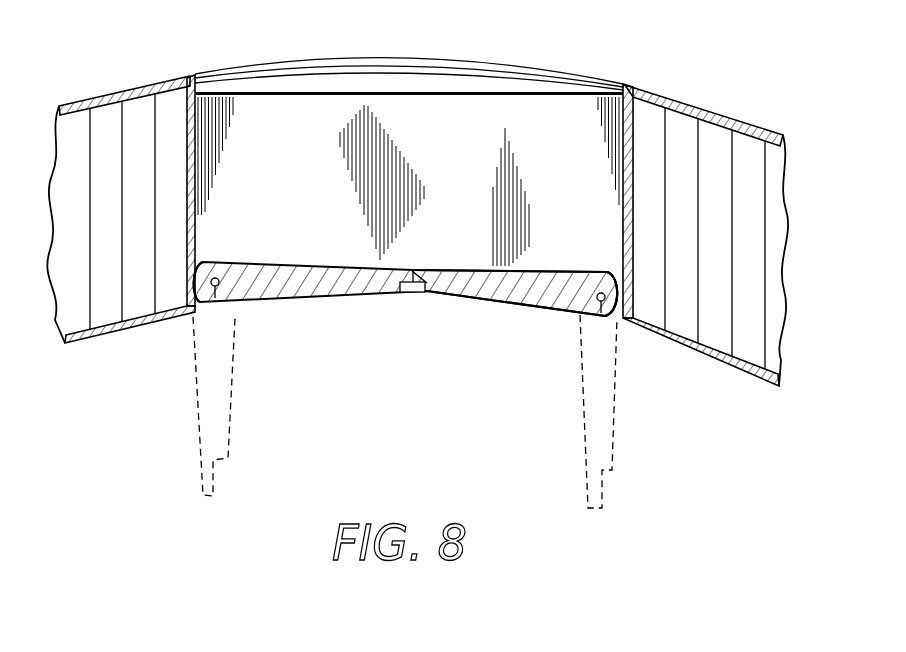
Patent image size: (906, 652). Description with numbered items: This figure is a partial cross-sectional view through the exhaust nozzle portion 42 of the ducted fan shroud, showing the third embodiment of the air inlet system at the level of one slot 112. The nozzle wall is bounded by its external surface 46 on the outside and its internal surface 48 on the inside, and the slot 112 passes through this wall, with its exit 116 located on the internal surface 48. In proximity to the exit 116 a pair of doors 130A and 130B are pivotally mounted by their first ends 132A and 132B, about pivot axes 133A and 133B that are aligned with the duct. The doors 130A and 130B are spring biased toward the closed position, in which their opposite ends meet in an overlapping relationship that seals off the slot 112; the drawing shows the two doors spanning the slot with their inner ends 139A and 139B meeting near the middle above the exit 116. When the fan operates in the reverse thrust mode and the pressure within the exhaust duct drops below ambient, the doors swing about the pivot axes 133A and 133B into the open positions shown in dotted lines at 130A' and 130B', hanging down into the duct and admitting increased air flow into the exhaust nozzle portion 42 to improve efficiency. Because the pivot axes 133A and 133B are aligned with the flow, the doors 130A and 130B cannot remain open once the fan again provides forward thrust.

The exhaust nozzle portion 42 is at (691, 92).
The external surface 46 is at (123, 88).
The internal surface 48 is at (85, 336).
The slot 112 is at (462, 150).
The exit 116 is at (433, 301).
The door 130A is at (406, 325).
The door 130B is at (515, 317).
The open position of door 130A' is at (272, 406).
The open position of door 130B' is at (532, 411).
The first end 132A is at (203, 260).
The first end 132B is at (605, 265).
The pivot axis 133A is at (217, 303).
The pivot axis 133B is at (600, 317).
The first plate joint edge 139A is at (395, 272).
The second plate joint edge 139B is at (402, 270).